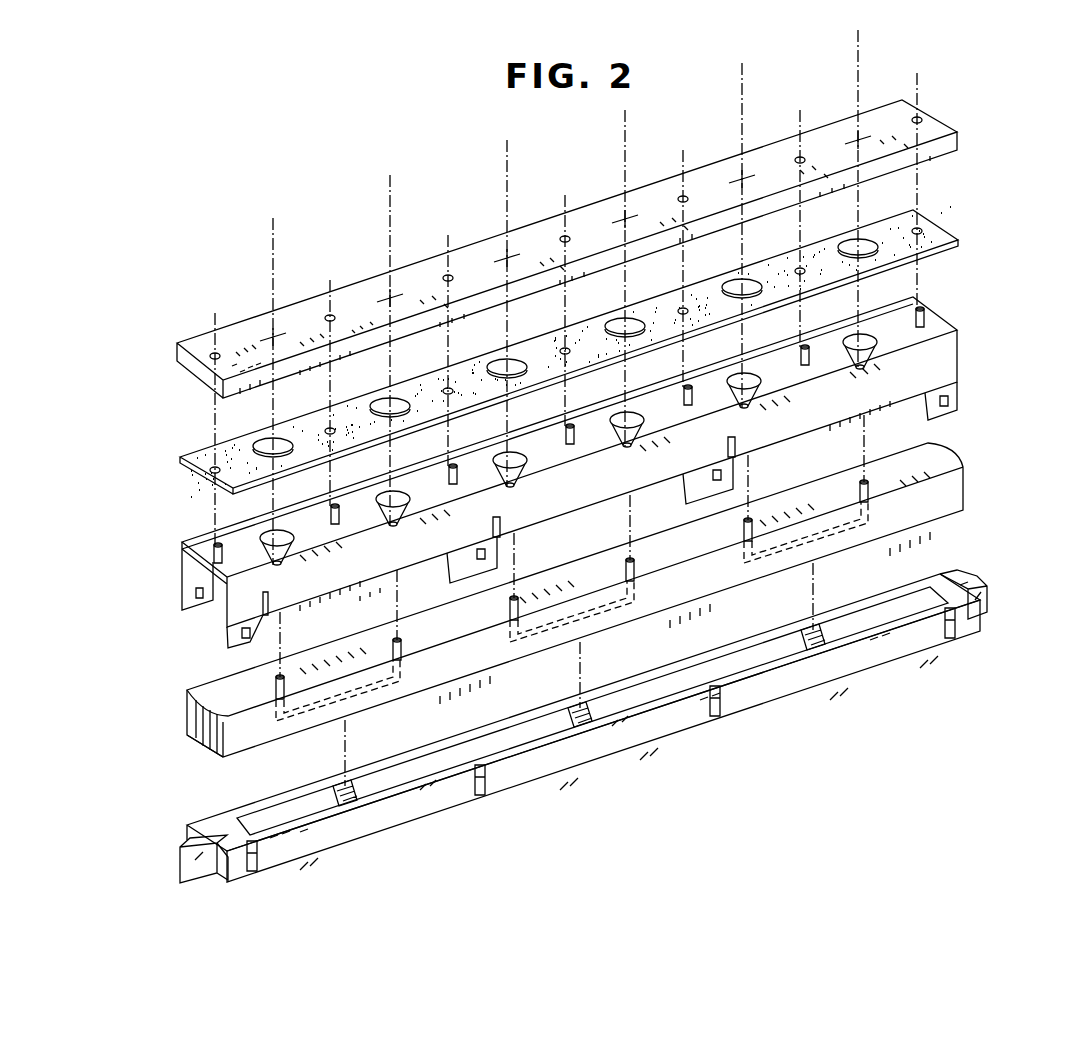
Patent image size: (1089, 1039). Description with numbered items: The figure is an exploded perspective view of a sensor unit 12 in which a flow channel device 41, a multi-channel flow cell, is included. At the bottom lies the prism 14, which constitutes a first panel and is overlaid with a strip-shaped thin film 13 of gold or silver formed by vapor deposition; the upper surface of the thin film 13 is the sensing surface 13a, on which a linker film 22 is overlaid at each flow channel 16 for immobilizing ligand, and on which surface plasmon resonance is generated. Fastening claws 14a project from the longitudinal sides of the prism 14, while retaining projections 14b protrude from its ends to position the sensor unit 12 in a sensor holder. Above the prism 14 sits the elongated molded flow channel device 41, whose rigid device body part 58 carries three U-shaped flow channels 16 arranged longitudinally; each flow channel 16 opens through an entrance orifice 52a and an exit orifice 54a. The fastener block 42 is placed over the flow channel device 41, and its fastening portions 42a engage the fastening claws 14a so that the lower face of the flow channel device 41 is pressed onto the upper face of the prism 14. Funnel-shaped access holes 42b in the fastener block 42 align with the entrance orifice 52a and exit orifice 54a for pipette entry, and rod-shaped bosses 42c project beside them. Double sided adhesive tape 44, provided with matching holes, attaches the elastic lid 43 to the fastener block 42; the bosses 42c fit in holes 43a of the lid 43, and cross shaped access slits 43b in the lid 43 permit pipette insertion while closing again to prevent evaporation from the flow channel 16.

The sensor unit 12 is at (300, 160).
The thin film 13 is at (222, 812).
The sensing surface 13a is at (535, 735).
The prism 14 is at (795, 700).
The fastening claws 14a is at (255, 873).
The retaining projections 14b is at (180, 858).
The flow channel 16 is at (313, 722).
The linker film 22 is at (347, 783).
The flow channel device 41 is at (985, 470).
The fastener block 42 is at (985, 352).
The fastening portions 42a is at (940, 410).
The access hole 42b is at (293, 542).
The bosses 42c is at (218, 543).
The lid 43 is at (978, 112).
The holes 43a is at (327, 314).
The cross shaped access slit 43b is at (268, 328).
The double sided adhesive tape 44 is at (942, 222).
The entrance orifice 52a is at (280, 676).
The exit orifice 54a is at (397, 640).
The device body part 58 is at (200, 725).